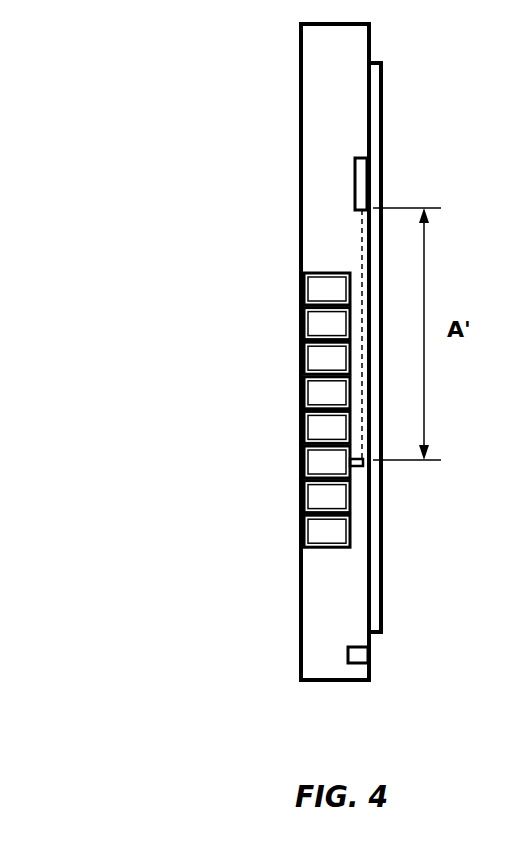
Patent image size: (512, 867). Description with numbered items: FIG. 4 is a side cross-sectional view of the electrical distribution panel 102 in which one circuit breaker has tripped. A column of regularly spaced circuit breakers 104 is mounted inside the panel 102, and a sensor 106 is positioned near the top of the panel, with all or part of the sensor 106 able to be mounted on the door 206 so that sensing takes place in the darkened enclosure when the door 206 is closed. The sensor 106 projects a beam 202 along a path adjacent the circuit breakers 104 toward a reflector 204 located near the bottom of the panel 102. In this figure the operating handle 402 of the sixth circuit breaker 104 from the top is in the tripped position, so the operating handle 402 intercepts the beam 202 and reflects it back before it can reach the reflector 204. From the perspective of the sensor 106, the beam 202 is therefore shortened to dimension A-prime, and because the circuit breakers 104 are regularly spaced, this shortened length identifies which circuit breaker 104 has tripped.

The panel 102 is at (123, 93).
The circuit breakers 104 is at (302, 290).
The sensor 106 is at (355, 190).
The beam 202 is at (360, 237).
The reflector 204 is at (362, 663).
The door 206 is at (383, 112).
The operating handle 402 is at (357, 468).